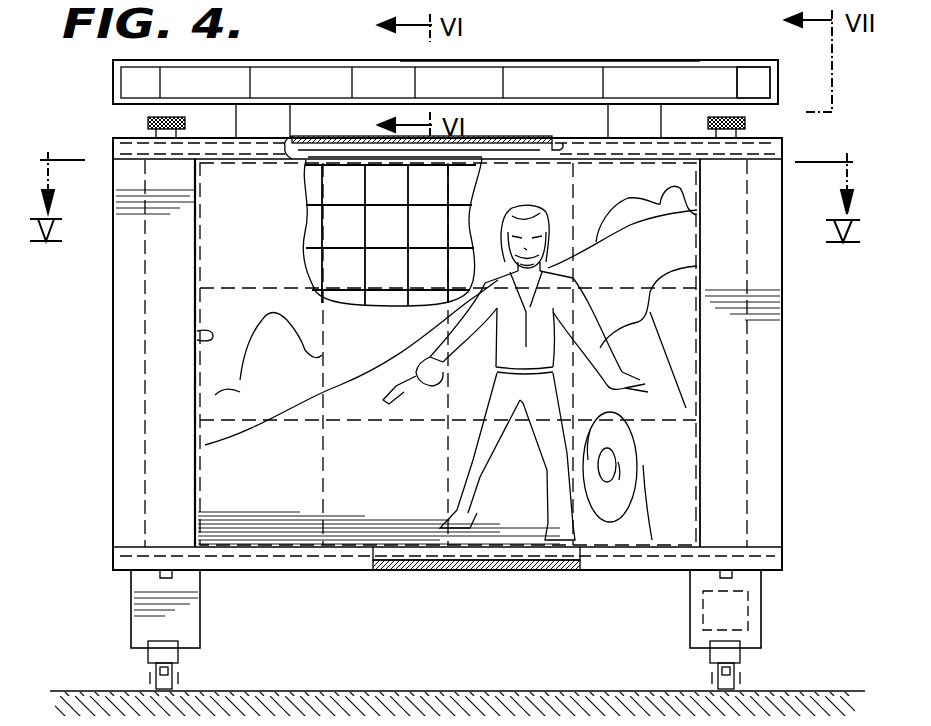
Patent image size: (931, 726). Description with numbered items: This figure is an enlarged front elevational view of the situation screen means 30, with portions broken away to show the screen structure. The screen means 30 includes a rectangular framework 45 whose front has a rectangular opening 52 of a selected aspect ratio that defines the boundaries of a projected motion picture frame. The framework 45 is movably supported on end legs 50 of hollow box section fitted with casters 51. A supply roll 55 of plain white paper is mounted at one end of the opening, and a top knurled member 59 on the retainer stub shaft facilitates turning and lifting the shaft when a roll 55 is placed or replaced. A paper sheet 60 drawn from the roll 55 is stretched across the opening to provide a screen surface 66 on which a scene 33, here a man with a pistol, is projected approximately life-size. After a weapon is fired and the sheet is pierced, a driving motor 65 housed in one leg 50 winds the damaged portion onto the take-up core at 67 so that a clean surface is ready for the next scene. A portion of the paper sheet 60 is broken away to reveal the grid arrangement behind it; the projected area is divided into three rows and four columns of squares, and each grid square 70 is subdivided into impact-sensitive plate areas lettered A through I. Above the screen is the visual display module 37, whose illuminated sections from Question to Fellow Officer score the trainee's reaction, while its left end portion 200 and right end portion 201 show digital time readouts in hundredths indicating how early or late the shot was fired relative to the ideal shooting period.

The end portion 200 is at (113, 77).
The visual display module 37 is at (561, 60).
The end portion 201 is at (778, 76).
The top knurled member 59 is at (148, 122).
The situation screen means 30 is at (790, 352).
The roll 55 is at (145, 441).
The rectangular opening 52 is at (197, 336).
The rectangular framework 45 is at (770, 400).
The take-up location 67 is at (748, 488).
The paper sheet 60 is at (218, 250).
The grid square 70 is at (462, 195).
The screen surface 66 is at (447, 365).
The scene 33 is at (552, 492).
The end legs 50 is at (190, 596).
The driving motor 65 is at (712, 606).
The casters 51 is at (165, 675).